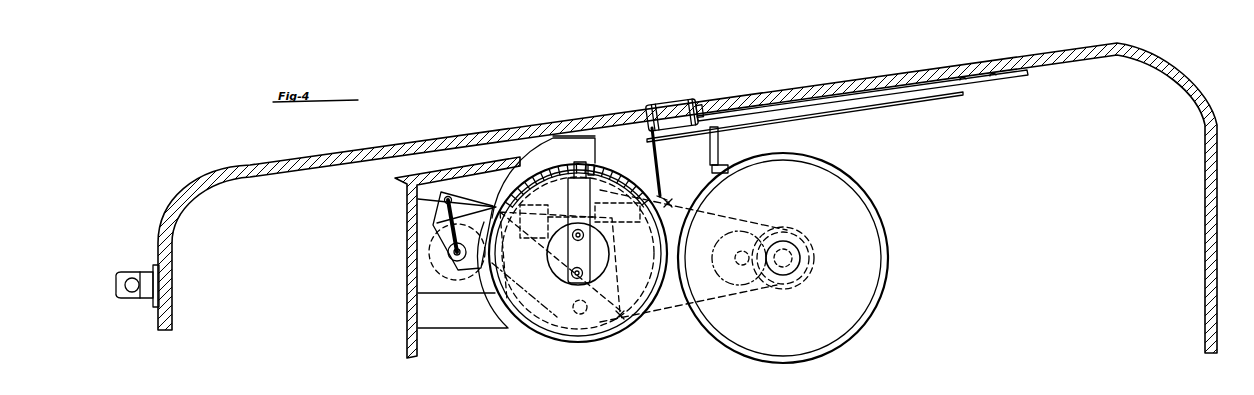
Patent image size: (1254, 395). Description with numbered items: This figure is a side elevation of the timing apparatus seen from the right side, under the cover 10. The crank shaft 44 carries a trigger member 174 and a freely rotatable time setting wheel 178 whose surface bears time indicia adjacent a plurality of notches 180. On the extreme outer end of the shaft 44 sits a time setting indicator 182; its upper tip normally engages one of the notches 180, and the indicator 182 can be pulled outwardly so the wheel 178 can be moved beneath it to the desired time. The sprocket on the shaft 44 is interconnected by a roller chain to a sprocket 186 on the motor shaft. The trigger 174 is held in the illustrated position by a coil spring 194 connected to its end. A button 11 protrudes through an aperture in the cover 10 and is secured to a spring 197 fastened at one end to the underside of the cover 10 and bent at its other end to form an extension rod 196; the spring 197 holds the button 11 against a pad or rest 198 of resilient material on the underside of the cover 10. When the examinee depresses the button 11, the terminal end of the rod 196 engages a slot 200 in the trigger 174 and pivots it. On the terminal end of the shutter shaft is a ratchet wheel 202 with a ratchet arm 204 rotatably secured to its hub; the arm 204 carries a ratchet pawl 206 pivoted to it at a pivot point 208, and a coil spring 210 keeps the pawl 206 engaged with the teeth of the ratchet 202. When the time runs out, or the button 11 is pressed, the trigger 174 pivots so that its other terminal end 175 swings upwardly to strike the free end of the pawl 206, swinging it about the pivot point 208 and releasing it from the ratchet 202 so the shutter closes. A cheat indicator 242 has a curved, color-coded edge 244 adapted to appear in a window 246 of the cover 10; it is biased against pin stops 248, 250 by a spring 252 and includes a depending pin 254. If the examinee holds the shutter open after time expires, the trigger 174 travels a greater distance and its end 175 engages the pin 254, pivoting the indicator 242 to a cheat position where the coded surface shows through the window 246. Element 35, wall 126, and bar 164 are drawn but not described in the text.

The cover 10 is at (986, 72).
The button 11 is at (679, 102).
The bar 35 is at (948, 97).
The shaft 44 is at (588, 250).
The inner wall 126 is at (408, 338).
The clamp bar 164 is at (578, 162).
The trigger member 174 is at (672, 203).
The terminal end 175 is at (496, 296).
The time setting wheel 178 is at (646, 318).
The notches 180 is at (626, 179).
The time setting indicator 182 is at (593, 168).
The sprocket 186 is at (788, 240).
The coil spring 194 is at (557, 341).
The extension rod 196 is at (657, 158).
The spring 197 is at (935, 74).
The pad or rest 198 is at (746, 103).
The slot 200 is at (664, 192).
The ratchet wheel 202 is at (443, 266).
The ratchet arm 204 is at (454, 252).
The ratchet pawl 206 is at (446, 200).
The pivot point 208 is at (496, 211).
The coil spring 210 is at (437, 224).
The cheat indicator 242 is at (553, 136).
The curved color-coded edge 244 is at (531, 152).
The window 246 is at (579, 123).
The pin stop 248 is at (557, 220).
The pin stop 250 is at (604, 200).
The spring 252 is at (561, 174).
The depending pin 254 is at (539, 269).